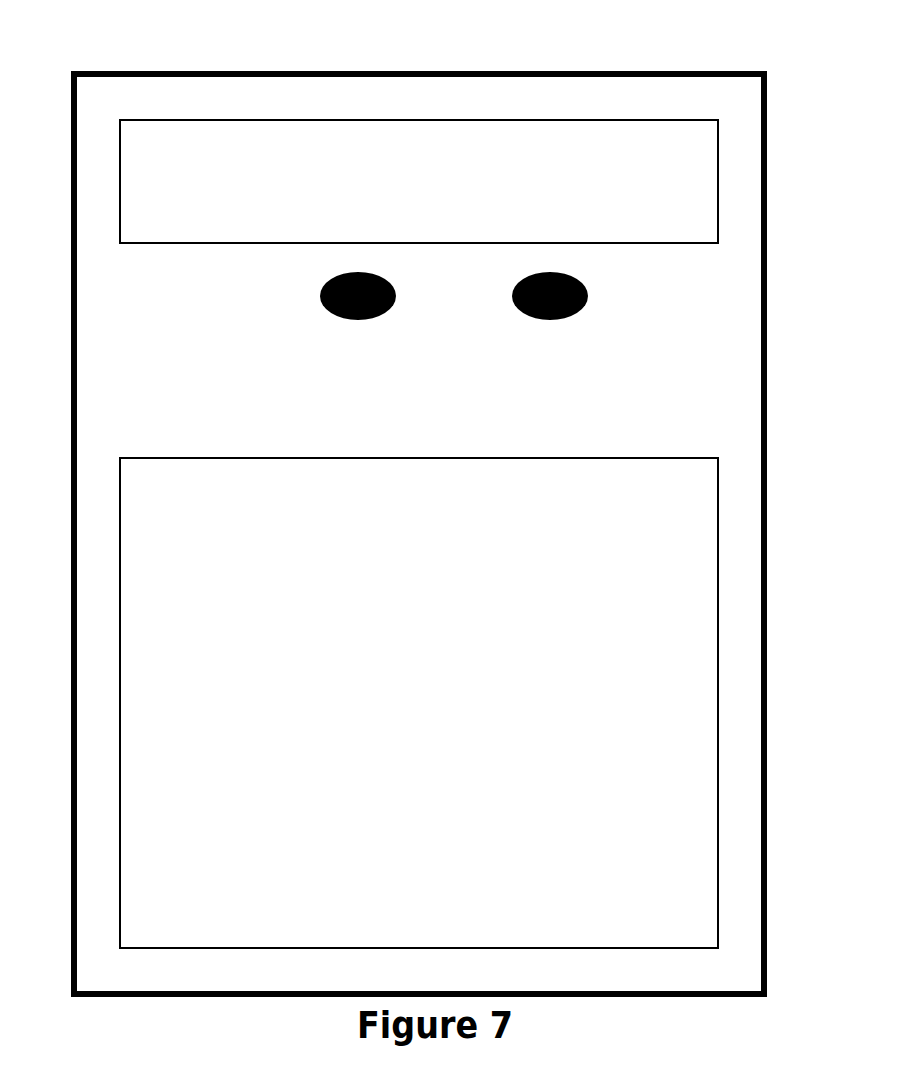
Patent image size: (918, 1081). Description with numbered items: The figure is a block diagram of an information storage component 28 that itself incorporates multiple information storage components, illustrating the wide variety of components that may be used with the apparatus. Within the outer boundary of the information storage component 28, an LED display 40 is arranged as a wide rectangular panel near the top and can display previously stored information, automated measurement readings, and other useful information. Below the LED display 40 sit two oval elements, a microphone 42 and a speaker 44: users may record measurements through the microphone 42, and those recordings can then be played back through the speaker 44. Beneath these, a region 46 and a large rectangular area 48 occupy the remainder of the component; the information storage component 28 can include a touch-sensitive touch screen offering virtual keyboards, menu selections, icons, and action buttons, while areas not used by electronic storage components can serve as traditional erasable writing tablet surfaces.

The information storage component 28 is at (88, 64).
The LED display 40 is at (197, 197).
The microphone 42 is at (319, 305).
The speaker 44 is at (534, 320).
The middle region 46 is at (567, 420).
The lower panel 48 is at (567, 623).